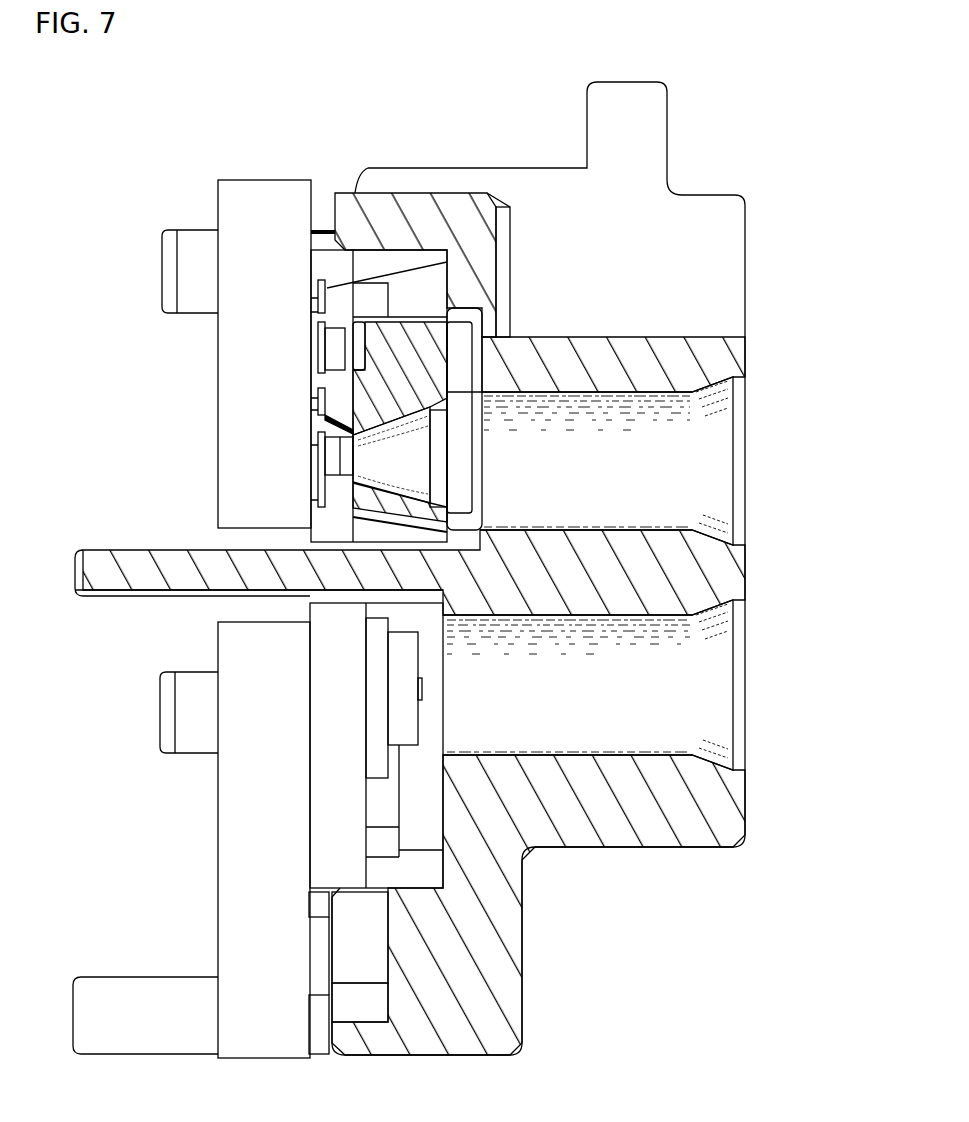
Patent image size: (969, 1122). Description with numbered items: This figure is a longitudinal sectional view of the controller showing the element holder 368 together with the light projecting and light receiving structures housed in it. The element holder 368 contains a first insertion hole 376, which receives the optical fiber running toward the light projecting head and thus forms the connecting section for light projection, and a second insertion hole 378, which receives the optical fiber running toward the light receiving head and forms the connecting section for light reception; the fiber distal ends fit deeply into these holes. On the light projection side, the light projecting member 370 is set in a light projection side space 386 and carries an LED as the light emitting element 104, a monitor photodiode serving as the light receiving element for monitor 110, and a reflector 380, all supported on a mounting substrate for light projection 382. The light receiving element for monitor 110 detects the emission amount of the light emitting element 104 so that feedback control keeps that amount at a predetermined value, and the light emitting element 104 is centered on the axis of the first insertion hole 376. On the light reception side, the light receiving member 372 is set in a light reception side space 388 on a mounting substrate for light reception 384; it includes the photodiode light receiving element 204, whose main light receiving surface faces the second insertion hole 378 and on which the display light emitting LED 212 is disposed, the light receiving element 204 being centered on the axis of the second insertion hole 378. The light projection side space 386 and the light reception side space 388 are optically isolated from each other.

The light emitting element 104 is at (330, 458).
The light receiving element for monitor 110 is at (335, 347).
The light receiving element 204 is at (400, 655).
The LED functioning as light emitting element for indication 212 is at (375, 716).
The element holder 368 is at (658, 833).
The light projecting member 370 is at (285, 387).
The light receiving member 372 is at (265, 745).
The first insertion hole 376 is at (677, 467).
The second insertion hole 378 is at (645, 755).
The reflector 380 is at (403, 380).
The mounting substrate for light projection 382 is at (228, 405).
The mounting substrate for light reception 384 is at (408, 805).
The light projection side space 386 is at (285, 387).
The light reception side space 388 is at (265, 745).